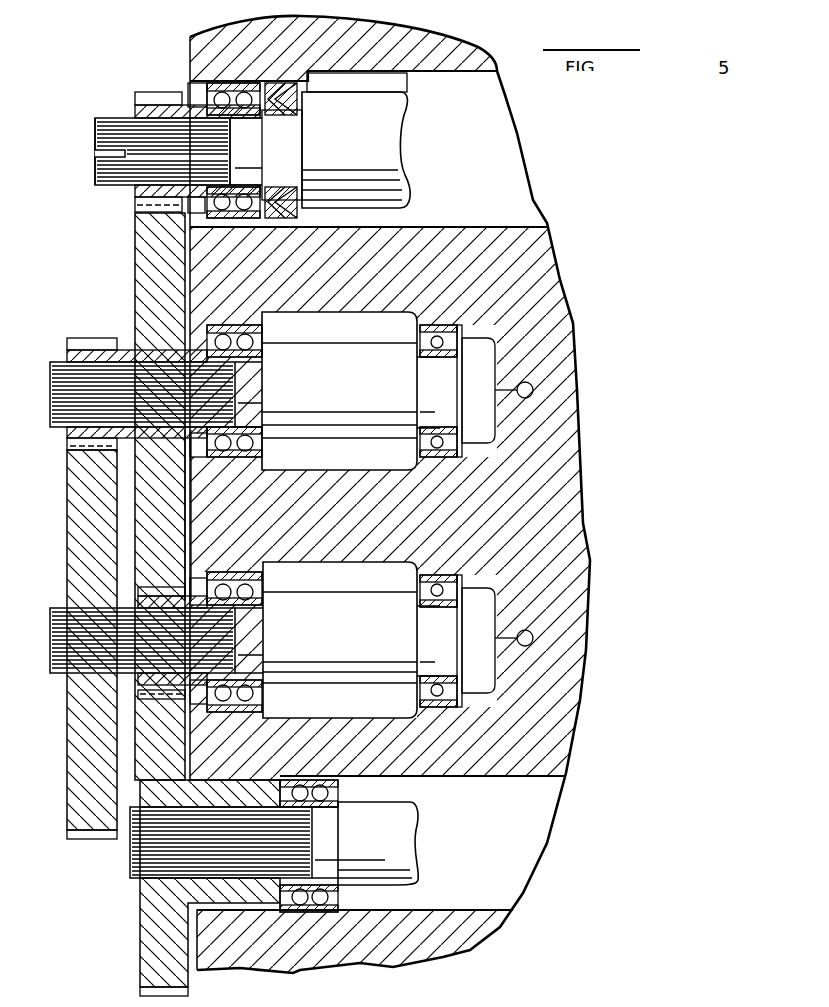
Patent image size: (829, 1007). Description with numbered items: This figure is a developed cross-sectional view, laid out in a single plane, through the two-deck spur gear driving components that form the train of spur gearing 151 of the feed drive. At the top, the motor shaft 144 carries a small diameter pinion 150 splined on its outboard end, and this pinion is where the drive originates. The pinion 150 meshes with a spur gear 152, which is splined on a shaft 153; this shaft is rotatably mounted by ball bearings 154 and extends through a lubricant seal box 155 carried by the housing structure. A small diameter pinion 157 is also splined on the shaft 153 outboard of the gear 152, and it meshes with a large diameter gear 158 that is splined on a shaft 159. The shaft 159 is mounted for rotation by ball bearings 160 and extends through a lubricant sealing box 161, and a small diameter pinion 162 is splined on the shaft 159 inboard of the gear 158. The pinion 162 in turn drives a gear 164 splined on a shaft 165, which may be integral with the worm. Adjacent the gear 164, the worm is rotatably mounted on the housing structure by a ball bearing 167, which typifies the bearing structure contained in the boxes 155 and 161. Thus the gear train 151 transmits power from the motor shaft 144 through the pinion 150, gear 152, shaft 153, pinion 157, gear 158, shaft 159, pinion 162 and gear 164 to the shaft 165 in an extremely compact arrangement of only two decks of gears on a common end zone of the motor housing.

The motor shaft 144 is at (388, 123).
The small diameter pinion 150 is at (157, 97).
The train of spur gearing 151 is at (62, 530).
The spur gear 152 is at (147, 270).
The shaft 153 is at (50, 377).
The ball bearings 154 is at (260, 343).
The lubricant seal box 155 is at (397, 391).
The small diameter pinion 157 is at (85, 343).
The large diameter gear 158 is at (83, 497).
The shaft 159 is at (50, 658).
The ball bearings 160 is at (264, 589).
The lubricant sealing box 161 is at (398, 640).
The small diameter pinion 162 is at (188, 553).
The gear 164 is at (155, 928).
The shaft 165 is at (313, 828).
The ball bearing 167 is at (337, 893).